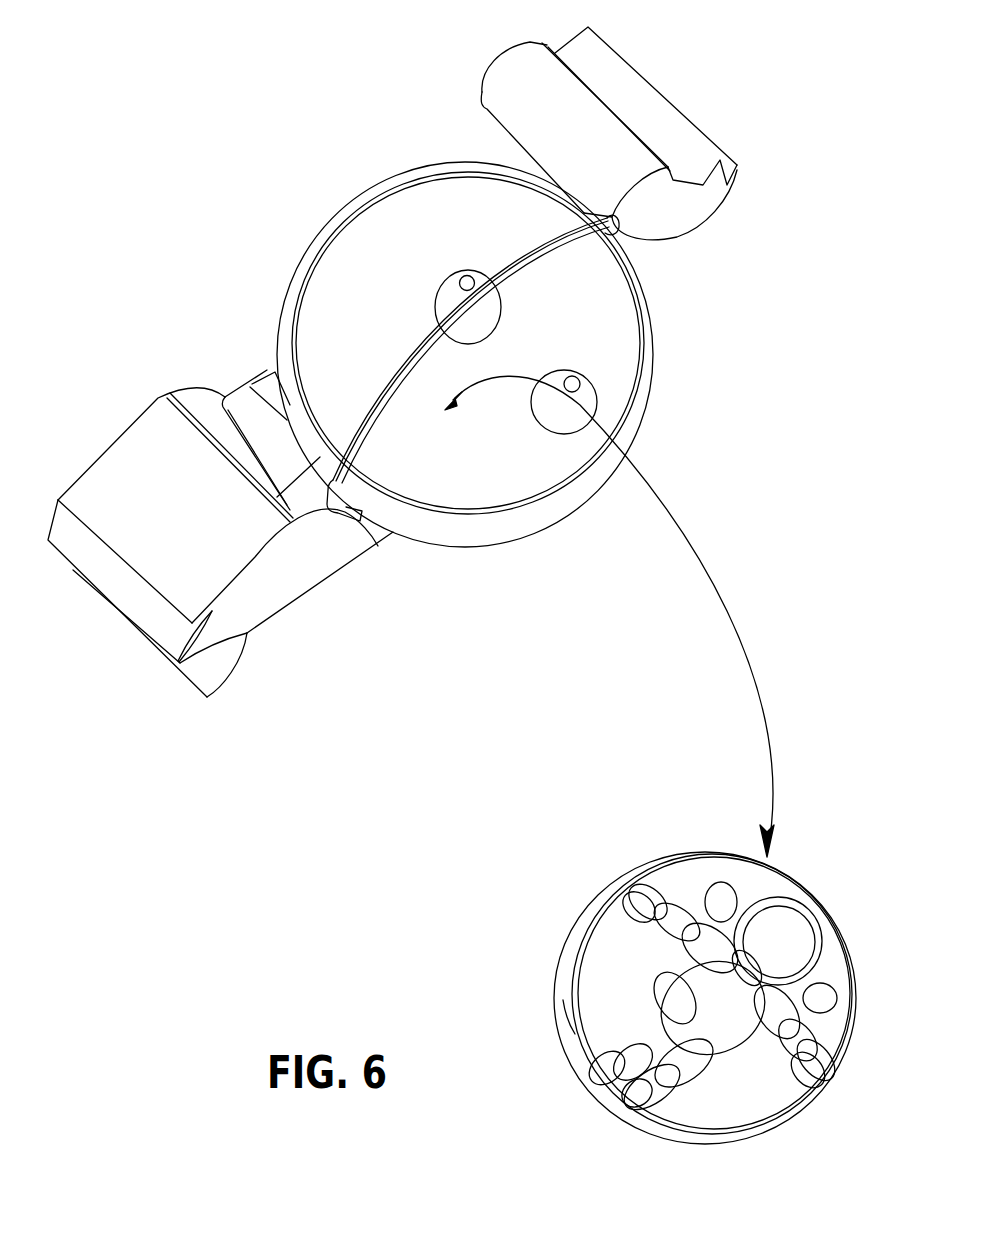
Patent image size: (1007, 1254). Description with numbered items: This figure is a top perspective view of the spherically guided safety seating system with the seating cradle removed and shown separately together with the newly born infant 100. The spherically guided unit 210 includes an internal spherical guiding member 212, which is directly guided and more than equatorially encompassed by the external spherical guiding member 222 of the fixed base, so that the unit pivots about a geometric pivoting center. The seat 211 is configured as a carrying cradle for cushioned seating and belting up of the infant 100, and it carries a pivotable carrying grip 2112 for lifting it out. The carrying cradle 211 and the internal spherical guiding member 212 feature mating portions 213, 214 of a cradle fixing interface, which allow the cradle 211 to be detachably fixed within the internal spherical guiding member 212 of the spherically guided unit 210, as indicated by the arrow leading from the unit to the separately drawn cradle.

The infant 100 is at (727, 1025).
The spherically guided unit 210 is at (499, 552).
The seat 211 is at (528, 951).
The pivotable carrying grip 2112 is at (573, 1040).
The internal spherical guiding member 212 is at (558, 510).
The mating portions of cradle fixing interface 213 is at (735, 892).
The mating portions of cradle fixing interface 214 is at (453, 279).
The external spherical guiding member 222 is at (618, 232).